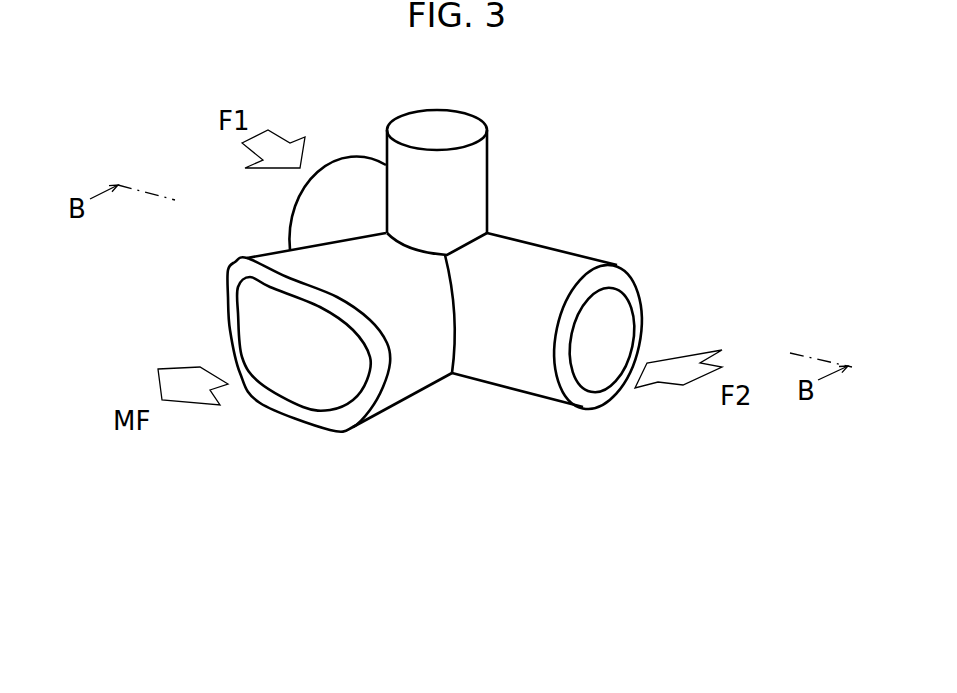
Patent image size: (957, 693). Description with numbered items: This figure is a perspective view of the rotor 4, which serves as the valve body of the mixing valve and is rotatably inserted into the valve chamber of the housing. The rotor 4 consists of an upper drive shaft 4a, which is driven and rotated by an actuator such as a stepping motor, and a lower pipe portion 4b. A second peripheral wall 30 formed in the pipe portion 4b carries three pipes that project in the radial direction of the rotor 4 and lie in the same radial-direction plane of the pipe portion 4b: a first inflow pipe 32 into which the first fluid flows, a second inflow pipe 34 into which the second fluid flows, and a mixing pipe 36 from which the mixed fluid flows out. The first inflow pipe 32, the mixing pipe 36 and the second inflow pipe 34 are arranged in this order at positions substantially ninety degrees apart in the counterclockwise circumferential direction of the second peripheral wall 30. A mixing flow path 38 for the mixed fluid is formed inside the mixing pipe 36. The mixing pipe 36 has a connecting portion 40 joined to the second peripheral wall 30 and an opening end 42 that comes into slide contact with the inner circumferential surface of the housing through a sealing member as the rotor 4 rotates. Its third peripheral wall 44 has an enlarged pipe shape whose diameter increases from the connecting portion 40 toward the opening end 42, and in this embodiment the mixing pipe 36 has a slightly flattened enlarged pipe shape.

The rotor 4 is at (500, 100).
The drive shaft 4a is at (488, 175).
The pipe portion 4b is at (457, 320).
The second peripheral wall 30 is at (426, 365).
The connecting portion 40 is at (426, 365).
The first inflow pipe 32 is at (291, 217).
The second inflow pipe 34 is at (568, 252).
The mixing pipe 36 is at (390, 408).
The mixing flow path 38 is at (316, 383).
The opening end 42 is at (360, 410).
The third peripheral wall 44 is at (410, 335).